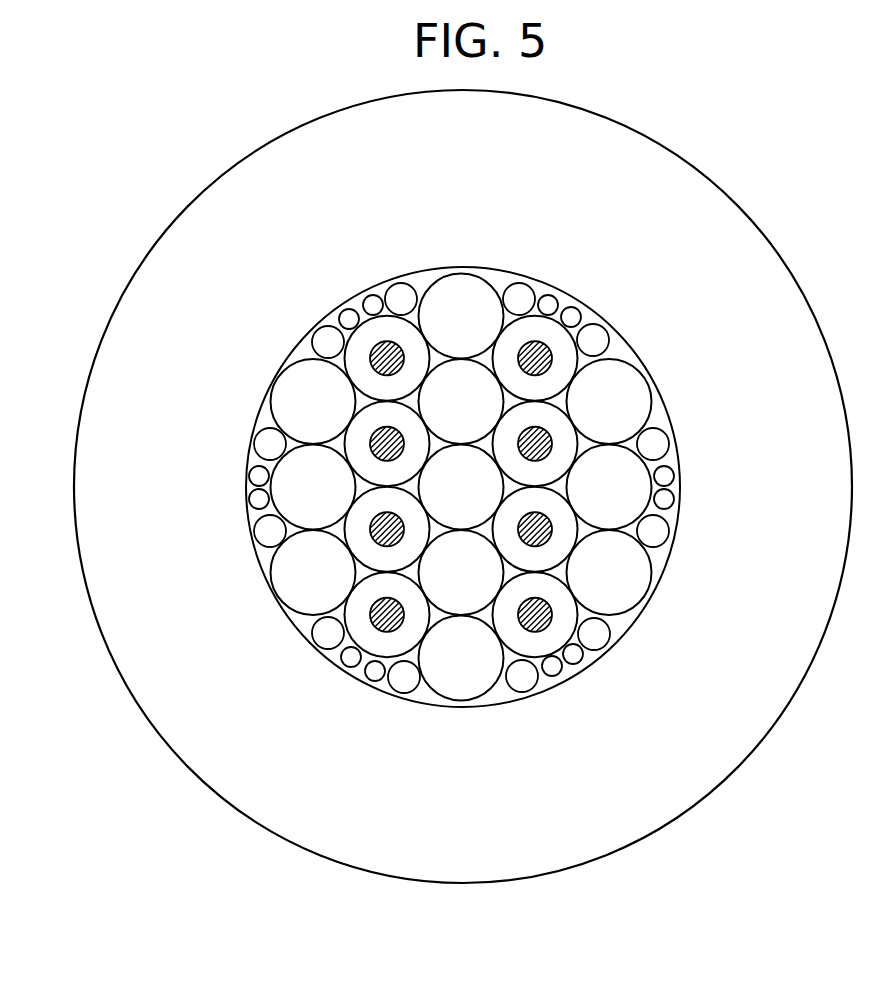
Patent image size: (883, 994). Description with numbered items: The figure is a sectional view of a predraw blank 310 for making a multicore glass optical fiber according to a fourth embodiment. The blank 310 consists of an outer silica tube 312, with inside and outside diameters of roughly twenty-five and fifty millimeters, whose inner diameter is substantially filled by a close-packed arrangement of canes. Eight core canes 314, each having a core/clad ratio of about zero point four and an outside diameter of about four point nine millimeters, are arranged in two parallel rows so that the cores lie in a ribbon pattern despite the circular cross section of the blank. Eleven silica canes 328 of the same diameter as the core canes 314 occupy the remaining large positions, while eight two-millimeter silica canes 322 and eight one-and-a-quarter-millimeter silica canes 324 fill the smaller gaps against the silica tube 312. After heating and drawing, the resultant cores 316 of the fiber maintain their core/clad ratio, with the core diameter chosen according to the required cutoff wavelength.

The blank 310 is at (693, 96).
The silica tube 312 is at (767, 237).
The core canes 314 is at (557, 343).
The cores 316 is at (550, 434).
The silica canes 322 is at (507, 695).
The silica canes 324 is at (582, 666).
The silica canes 328 is at (262, 563).